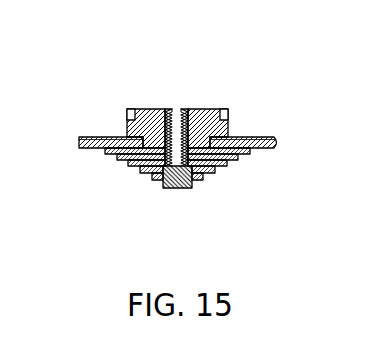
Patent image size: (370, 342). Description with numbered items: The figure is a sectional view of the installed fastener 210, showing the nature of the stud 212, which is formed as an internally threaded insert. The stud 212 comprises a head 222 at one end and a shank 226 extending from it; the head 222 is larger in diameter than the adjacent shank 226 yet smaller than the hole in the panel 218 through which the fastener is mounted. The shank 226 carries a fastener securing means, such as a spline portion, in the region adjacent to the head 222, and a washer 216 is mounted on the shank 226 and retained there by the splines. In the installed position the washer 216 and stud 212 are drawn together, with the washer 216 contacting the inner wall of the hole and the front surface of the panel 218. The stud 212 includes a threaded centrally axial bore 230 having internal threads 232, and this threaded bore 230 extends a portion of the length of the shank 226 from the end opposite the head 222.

The fastener 210 is at (194, 139).
The stud 212 is at (199, 191).
The washer 216 is at (233, 107).
The panel 218 is at (266, 136).
The head 222 is at (163, 188).
The shank 226 is at (152, 174).
The threaded centrally axial bore 230 is at (181, 104).
The internal threads 232 is at (215, 108).